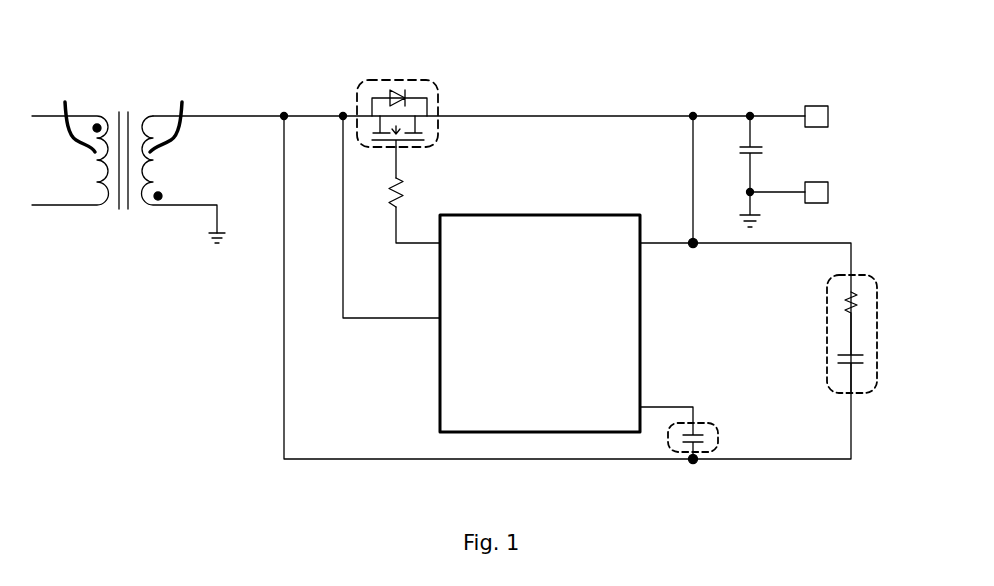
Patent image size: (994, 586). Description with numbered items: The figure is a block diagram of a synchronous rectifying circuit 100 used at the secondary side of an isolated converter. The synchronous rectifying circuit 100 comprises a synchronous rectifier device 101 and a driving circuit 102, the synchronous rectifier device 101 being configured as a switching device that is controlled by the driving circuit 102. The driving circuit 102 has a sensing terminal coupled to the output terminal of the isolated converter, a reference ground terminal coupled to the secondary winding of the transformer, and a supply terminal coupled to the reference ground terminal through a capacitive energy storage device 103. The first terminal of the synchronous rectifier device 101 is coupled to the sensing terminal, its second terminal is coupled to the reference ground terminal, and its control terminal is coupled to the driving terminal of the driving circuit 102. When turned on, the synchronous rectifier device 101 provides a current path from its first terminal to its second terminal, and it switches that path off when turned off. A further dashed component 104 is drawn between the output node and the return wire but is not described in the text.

The synchronous rectifying circuit 100 is at (245, 47).
The synchronous rectifier device 101 is at (422, 80).
The driving circuit 102 is at (540, 323).
The capacitive energy storage device 103 is at (711, 417).
The RC snubber circuit 104 is at (877, 313).